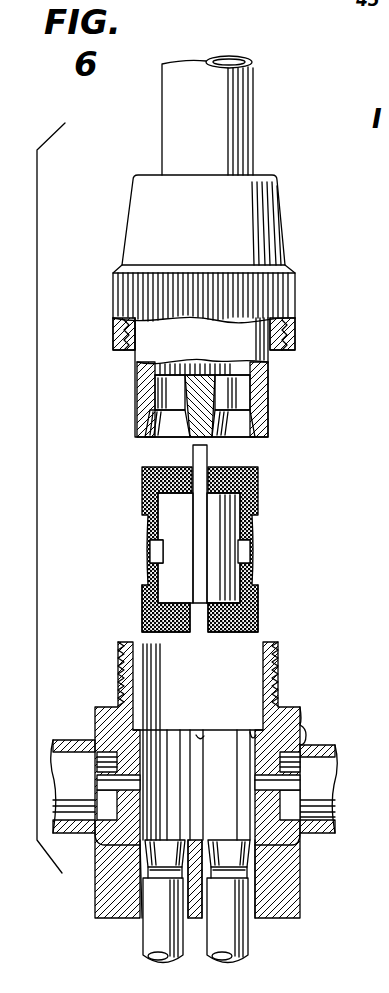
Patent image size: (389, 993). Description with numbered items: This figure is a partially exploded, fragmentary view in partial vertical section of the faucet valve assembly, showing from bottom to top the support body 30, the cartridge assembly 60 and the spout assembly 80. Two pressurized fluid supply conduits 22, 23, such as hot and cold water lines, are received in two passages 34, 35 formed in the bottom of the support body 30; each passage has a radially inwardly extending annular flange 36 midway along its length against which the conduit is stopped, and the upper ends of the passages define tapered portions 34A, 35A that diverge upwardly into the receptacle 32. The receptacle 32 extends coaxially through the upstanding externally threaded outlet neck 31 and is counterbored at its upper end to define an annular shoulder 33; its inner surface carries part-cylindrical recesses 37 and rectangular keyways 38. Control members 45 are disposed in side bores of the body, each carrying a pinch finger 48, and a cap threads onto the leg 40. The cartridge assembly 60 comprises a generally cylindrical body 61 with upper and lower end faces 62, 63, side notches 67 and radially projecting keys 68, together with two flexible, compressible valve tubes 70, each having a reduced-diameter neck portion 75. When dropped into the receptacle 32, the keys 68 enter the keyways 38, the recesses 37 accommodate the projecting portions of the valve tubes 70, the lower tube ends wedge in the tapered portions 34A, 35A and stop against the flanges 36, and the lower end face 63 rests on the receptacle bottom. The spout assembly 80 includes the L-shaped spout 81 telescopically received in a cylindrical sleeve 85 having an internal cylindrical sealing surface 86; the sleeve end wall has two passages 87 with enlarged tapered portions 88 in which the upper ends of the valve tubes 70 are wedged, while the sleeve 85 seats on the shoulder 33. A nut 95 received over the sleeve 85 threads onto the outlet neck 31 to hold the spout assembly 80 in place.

The pressurized fluid supply conduit 22 is at (145, 948).
The pressurized fluid supply conduit 23 is at (250, 950).
The support body 30 is at (303, 890).
The outlet neck 31 is at (128, 668).
The receptacle 32 is at (222, 752).
The annular shoulder 33 is at (256, 750).
The passage 34 is at (150, 923).
The tapered portion 34A is at (146, 845).
The passage 35 is at (245, 923).
The tapered portion 35A is at (246, 848).
The annular flange 36 is at (170, 872).
The part-cylindrical recess 37 is at (150, 738).
The keyway 38 is at (199, 738).
The leg 40 is at (330, 745).
The control member 45 is at (70, 768).
The pinch finger 48 is at (290, 787).
The cartridge assembly 60 is at (270, 508).
The body 61 is at (178, 507).
The upper end face 62 is at (230, 498).
The lower end face 63 is at (230, 606).
The side notch 67 is at (152, 552).
The key 68 is at (200, 455).
The valve tube 70 is at (140, 610).
The neck portion 75 is at (254, 552).
The spout assembly 80 is at (314, 286).
The spout 81 is at (172, 121).
The sleeve 85 is at (148, 363).
The internal cylindrical sealing surface 86 is at (240, 360).
The cylindrical passage 87 is at (246, 392).
The tapered portion 88 is at (246, 426).
The nut 95 is at (142, 222).